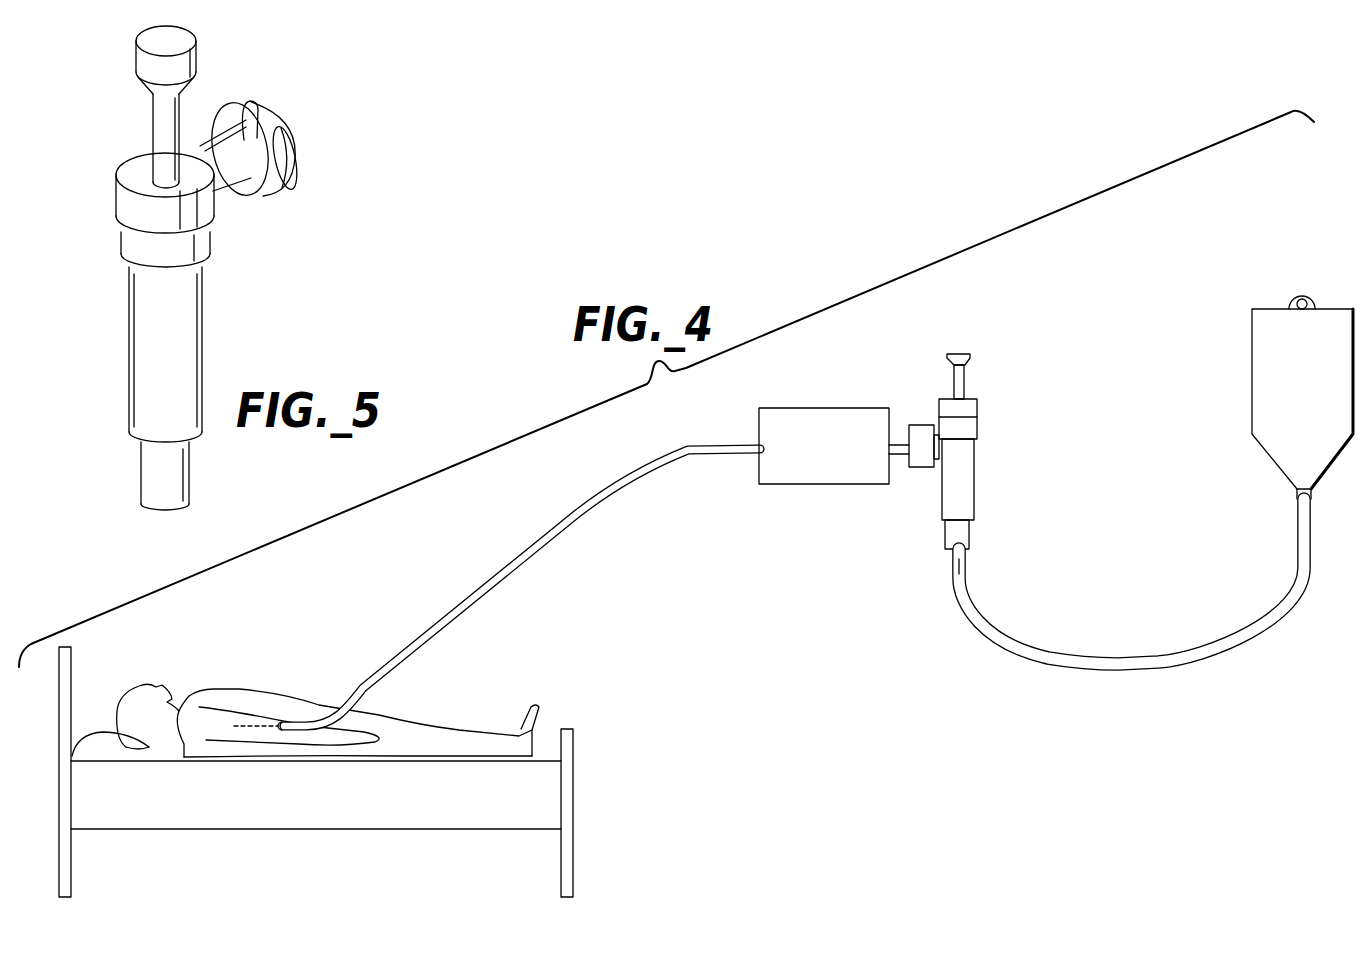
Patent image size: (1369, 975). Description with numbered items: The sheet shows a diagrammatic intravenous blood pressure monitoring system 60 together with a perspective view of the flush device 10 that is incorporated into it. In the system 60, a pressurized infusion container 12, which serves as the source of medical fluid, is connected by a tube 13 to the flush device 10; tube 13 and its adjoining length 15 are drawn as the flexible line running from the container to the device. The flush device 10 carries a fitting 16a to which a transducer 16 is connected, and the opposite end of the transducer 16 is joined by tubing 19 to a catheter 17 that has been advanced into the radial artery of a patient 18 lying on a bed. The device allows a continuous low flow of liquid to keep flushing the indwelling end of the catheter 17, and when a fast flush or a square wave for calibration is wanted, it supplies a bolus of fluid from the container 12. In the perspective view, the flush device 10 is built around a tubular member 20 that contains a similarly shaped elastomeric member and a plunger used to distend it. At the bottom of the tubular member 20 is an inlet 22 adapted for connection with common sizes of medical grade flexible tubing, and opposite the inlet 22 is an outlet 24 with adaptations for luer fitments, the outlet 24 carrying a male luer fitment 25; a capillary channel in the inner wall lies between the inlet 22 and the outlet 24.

In FIG. 4, the flush device 10 is at (991, 418).
In FIG. 4, the pressurized infusion container 12 is at (1253, 370).
In FIG. 4, the tube 13 is at (1227, 639).
In FIG. 4, the supply tubing section 15 is at (1022, 649).
In FIG. 4, the transducer 16 is at (868, 409).
In FIG. 4, the fitting 16a is at (920, 468).
In FIG. 5, the fitting 16a is at (263, 104).
In FIG. 4, the catheter 17 is at (250, 733).
In FIG. 4, the patient 18 is at (290, 702).
In FIG. 4, the tubing 19 is at (591, 509).
In FIG. 5, the tubular member 20 is at (180, 325).
In FIG. 5, the inlet 22 is at (180, 487).
In FIG. 5, the outlet 24 is at (297, 109).
In FIG. 5, the male luer fitment 25 is at (279, 169).
In FIG. 4, the blood pressure monitoring system 60 is at (1131, 681).